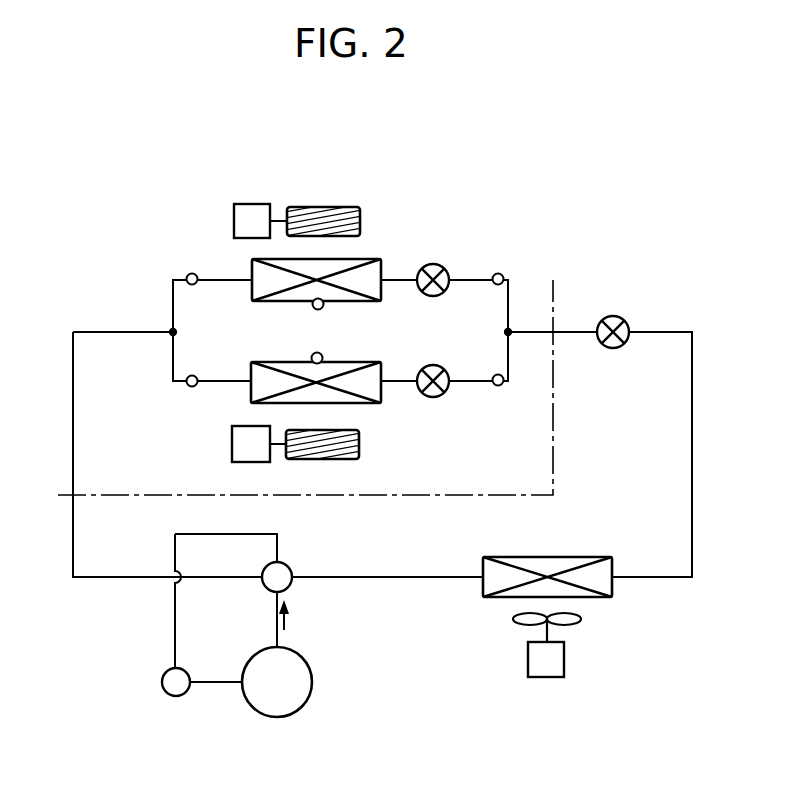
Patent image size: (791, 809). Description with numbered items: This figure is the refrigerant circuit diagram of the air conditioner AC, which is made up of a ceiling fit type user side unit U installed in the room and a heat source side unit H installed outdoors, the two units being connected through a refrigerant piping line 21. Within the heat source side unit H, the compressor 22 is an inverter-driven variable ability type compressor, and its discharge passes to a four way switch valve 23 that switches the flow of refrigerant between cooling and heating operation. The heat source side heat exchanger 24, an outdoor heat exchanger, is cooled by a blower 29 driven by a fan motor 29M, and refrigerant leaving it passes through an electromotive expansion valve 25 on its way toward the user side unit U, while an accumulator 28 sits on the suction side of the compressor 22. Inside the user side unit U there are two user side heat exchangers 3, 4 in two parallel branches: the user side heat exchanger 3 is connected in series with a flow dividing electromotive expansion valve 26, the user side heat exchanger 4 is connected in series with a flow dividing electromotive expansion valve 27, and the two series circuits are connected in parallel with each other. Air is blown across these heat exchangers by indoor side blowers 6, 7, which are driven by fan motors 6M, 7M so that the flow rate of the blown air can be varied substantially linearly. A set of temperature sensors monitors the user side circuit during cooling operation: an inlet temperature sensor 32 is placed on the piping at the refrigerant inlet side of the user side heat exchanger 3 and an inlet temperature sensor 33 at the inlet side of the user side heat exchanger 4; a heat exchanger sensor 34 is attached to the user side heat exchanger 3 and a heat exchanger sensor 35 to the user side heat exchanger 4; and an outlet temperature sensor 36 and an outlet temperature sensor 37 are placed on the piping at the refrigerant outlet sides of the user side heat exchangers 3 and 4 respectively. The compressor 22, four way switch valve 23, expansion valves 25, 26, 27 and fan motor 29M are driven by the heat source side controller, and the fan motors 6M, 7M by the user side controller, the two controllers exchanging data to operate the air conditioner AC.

The user side heat exchanger 3 is at (361, 257).
The user side heat exchanger 4 is at (383, 402).
The indoor side blower 6 is at (318, 206).
The fan motor 6M is at (249, 203).
The indoor side blower 7 is at (346, 460).
The fan motor 7M is at (231, 446).
The refrigerant piping line 21 is at (413, 576).
The compressor 22 is at (313, 681).
The four way switch valve 23 is at (289, 566).
The heat source side heat exchanger 24 is at (591, 556).
The electromotive expansion valve 25 is at (613, 315).
The flow dividing electromotive expansion valve 26 is at (433, 263).
The flow dividing electromotive expansion valve 27 is at (447, 393).
The accumulator 28 is at (161, 682).
The blower 29 is at (581, 622).
The fan motor 29M is at (565, 662).
The inlet temperature sensor 32 is at (498, 272).
The inlet temperature sensor 33 is at (497, 374).
The heat exchanger sensor 34 is at (323, 308).
The heat exchanger sensor 35 is at (312, 354).
The outlet temperature sensor 36 is at (190, 272).
The outlet temperature sensor 37 is at (192, 374).
The user side unit U is at (110, 277).
The air conditioner AC is at (584, 212).
The heat source side unit H is at (436, 610).